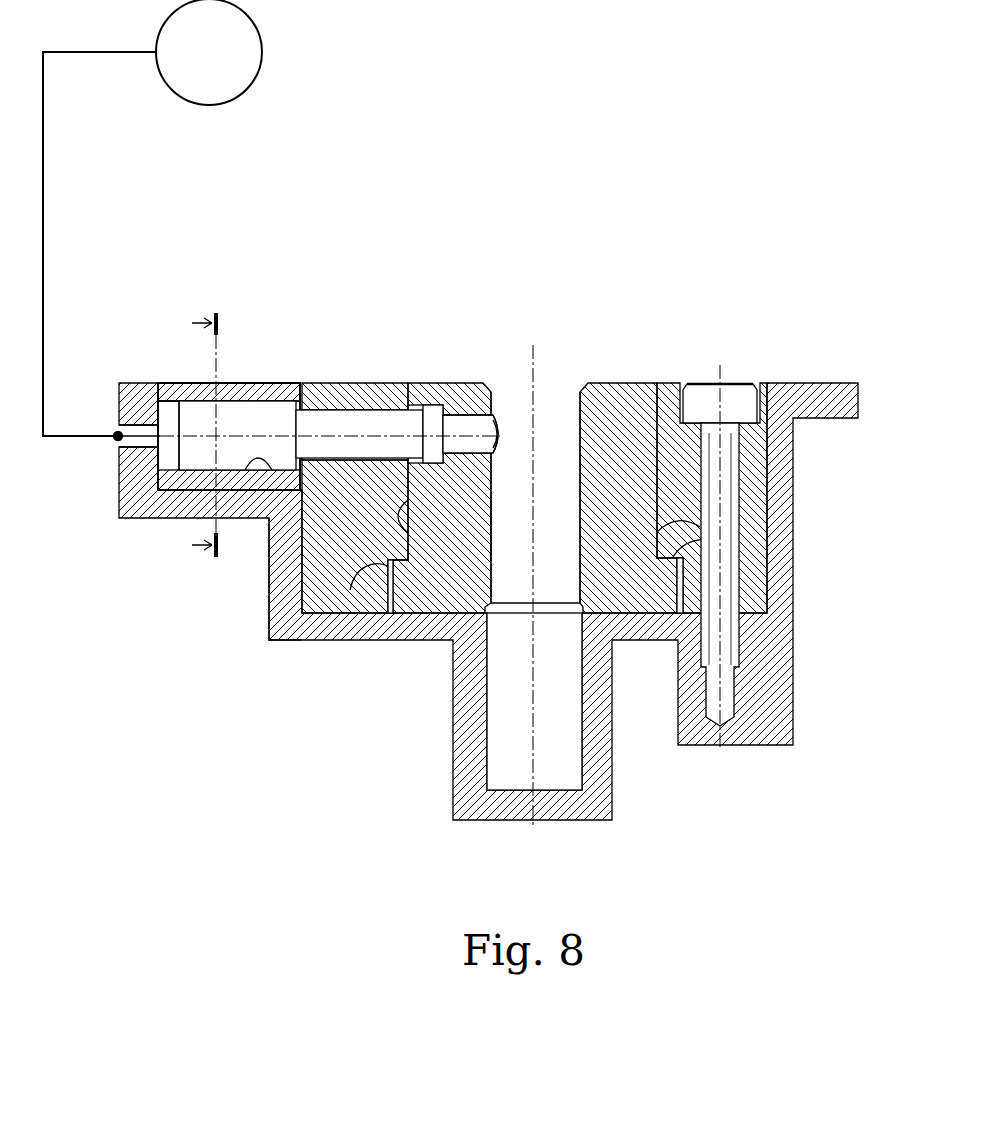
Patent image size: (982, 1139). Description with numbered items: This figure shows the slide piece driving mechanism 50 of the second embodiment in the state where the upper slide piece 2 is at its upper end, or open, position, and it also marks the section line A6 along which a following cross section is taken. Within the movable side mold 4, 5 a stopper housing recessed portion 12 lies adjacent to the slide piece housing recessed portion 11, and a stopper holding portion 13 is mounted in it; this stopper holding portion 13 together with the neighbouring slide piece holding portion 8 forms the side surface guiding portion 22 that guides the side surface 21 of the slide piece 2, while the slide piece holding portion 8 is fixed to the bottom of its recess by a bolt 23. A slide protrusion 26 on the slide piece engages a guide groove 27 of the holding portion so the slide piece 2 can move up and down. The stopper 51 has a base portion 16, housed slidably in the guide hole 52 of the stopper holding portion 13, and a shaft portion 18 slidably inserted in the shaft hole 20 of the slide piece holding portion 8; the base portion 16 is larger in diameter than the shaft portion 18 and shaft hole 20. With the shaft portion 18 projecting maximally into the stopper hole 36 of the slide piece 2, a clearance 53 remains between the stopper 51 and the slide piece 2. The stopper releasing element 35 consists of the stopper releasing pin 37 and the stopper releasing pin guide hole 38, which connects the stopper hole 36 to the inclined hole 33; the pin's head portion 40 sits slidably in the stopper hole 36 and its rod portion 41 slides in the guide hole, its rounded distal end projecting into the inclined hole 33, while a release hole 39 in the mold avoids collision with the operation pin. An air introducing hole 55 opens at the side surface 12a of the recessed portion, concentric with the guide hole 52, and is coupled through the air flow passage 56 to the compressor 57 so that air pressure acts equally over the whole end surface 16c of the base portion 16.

The slide piece 2 is at (535, 501).
The movable side mold 4 is at (464, 567).
The base member 5 is at (453, 636).
The slide piece holding portion 8 is at (350, 382).
The slide piece housing recessed portion 11 is at (776, 498).
The stopper housing recessed portion 12 is at (148, 497).
The side surface 12a is at (172, 400).
The stopper holding portion 13 is at (253, 382).
The base portion 16 is at (173, 475).
The end surface 16c is at (178, 425).
The shaft portion 18 is at (330, 420).
The shaft hole 20 is at (362, 458).
The side surface 21 is at (408, 540).
The side surface guiding portion 22 is at (462, 429).
The bolt 23 is at (725, 508).
The slide protrusion 26 is at (390, 590).
The guide groove 27 is at (350, 590).
The inclined hole 33 is at (572, 590).
The stopper releasing element 35 is at (465, 406).
The stopper hole 36 is at (506, 349).
The stopper releasing pin 37 is at (480, 406).
The stopper releasing pin guide hole 38 is at (492, 530).
The release hole 39 is at (508, 772).
The head portion 40 is at (423, 382).
The rod portion 41 is at (505, 432).
The slide piece driving mechanism 50 is at (175, 408).
The stopper 51 is at (362, 410).
The guide hole 52 is at (268, 470).
The clearance 53 is at (276, 592).
The air introducing hole 55 is at (135, 455).
The air flow passage 56 is at (43, 168).
The compressor 57 is at (262, 52).
The section line A6 is at (204, 440).